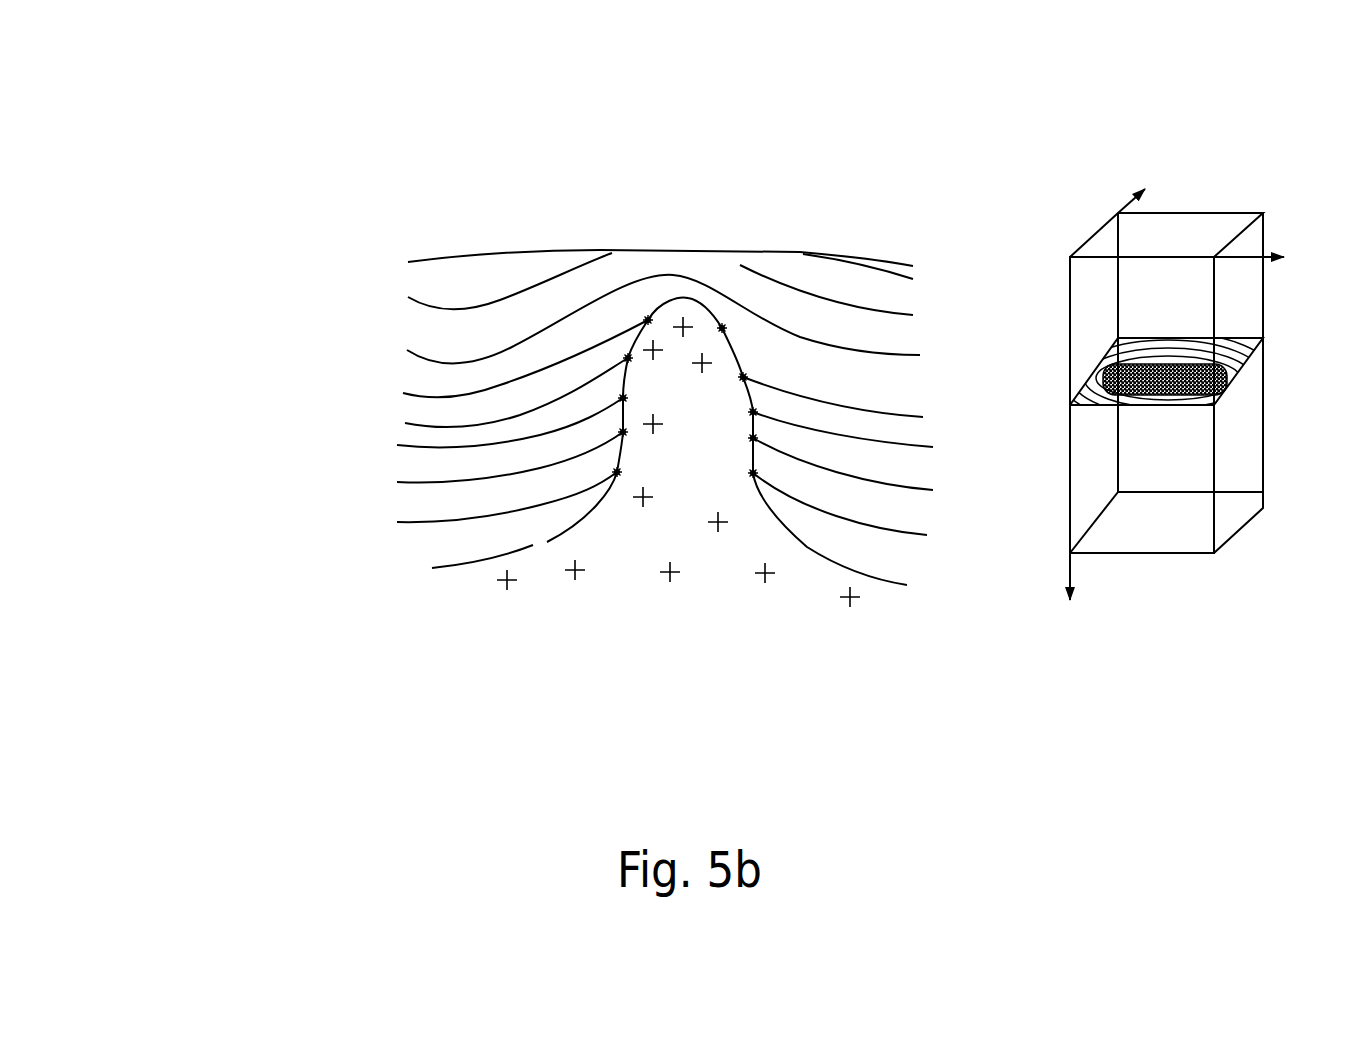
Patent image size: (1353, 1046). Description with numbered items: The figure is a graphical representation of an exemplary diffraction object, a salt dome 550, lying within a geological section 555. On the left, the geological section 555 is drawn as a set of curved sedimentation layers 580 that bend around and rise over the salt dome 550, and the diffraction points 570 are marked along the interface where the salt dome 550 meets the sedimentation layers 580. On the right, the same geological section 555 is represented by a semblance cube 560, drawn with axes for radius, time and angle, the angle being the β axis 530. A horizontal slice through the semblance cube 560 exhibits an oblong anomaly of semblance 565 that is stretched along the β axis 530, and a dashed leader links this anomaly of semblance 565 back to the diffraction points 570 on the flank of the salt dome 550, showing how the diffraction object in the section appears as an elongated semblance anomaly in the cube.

The geological section 555 is at (550, 213).
The sedimentation layers 580 is at (405, 547).
The salt dome 550 is at (500, 552).
The diffraction points 570 is at (717, 347).
The semblance cube 560 is at (1098, 183).
The β axis 530 is at (1283, 281).
The anomaly of semblance 565 is at (764, 376).